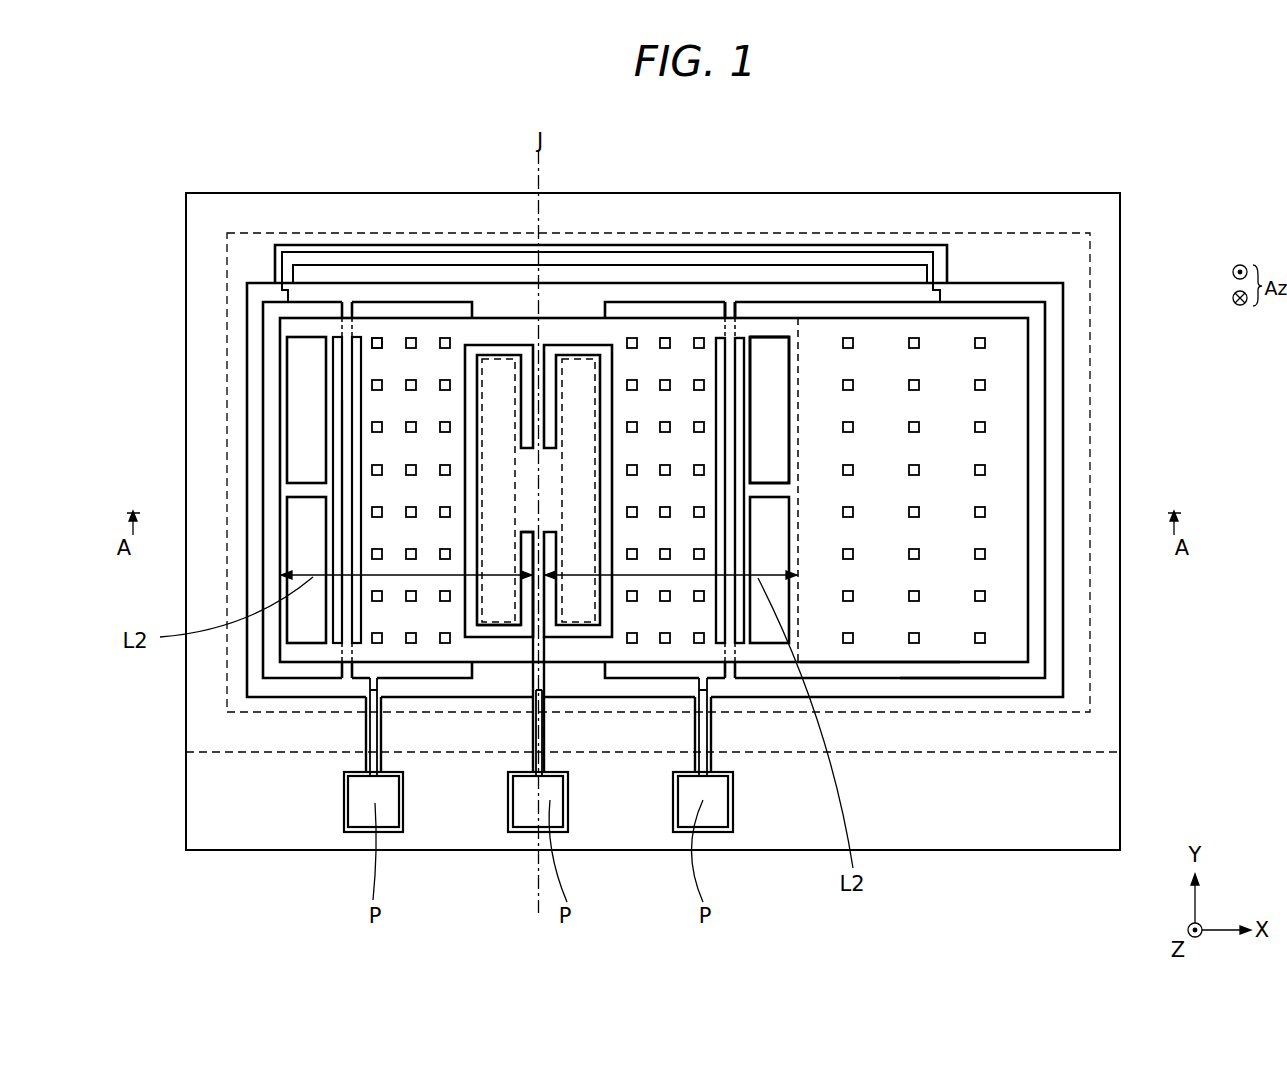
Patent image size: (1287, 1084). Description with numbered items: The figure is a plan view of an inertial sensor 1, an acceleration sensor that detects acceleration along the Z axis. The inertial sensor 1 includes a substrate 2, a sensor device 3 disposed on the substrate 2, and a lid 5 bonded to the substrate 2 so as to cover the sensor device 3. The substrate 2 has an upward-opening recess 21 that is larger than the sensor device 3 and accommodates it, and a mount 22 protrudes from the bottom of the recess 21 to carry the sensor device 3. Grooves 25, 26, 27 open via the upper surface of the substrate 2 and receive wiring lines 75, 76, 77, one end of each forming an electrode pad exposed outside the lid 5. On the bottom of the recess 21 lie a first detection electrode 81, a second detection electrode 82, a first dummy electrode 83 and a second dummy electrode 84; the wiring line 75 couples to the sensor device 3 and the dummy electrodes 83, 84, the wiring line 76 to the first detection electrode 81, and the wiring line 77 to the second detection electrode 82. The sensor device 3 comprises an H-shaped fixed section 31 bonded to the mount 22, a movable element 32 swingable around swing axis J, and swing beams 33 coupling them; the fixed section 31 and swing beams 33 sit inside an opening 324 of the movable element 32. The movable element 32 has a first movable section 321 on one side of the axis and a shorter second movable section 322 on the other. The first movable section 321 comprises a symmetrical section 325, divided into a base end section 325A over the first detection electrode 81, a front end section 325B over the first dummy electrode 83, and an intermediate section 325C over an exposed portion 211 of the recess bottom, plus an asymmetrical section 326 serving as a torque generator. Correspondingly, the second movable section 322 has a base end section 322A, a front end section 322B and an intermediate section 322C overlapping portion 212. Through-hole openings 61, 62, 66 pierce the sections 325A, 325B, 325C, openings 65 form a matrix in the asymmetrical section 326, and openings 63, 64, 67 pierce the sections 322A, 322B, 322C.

The inertial sensor 1 is at (1135, 168).
The substrate 2 is at (1089, 862).
The sensor device 3 is at (906, 310).
The lid 5 is at (258, 214).
The recess 21 is at (1010, 697).
The mount 22 is at (500, 397).
The groove 25 is at (535, 595).
The groove 26 is at (642, 668).
The groove 27 is at (365, 737).
The fixed section 31 is at (572, 407).
The movable element 32 is at (881, 672).
The swing beams 33 is at (486, 620).
The openings 61 is at (665, 337).
The openings 62 is at (767, 417).
The openings 63 is at (445, 337).
The openings 64 is at (307, 513).
The openings 65 is at (980, 470).
The opening 66 is at (733, 630).
The opening 67 is at (358, 343).
The wiring line 75 is at (542, 732).
The wiring line 76 is at (703, 732).
The wiring line 77 is at (375, 730).
The first detection electrode 81 is at (646, 680).
The second detection electrode 82 is at (447, 673).
The first dummy electrode 83 is at (948, 670).
The second dummy electrode 84 is at (318, 670).
The portion 211 is at (730, 558).
The portion 212 is at (343, 537).
The first movable section 321 is at (967, 330).
The second movable section 322 is at (377, 365).
The base end section 322A is at (400, 650).
The front end section 322B is at (297, 650).
The intermediate section 322C is at (347, 650).
The opening 324 is at (509, 345).
The symmetrical section 325 is at (850, 148).
The base end section 325A is at (678, 328).
The front end section 325B is at (770, 328).
The intermediate section 325C is at (737, 328).
The asymmetrical section 326 is at (1002, 380).